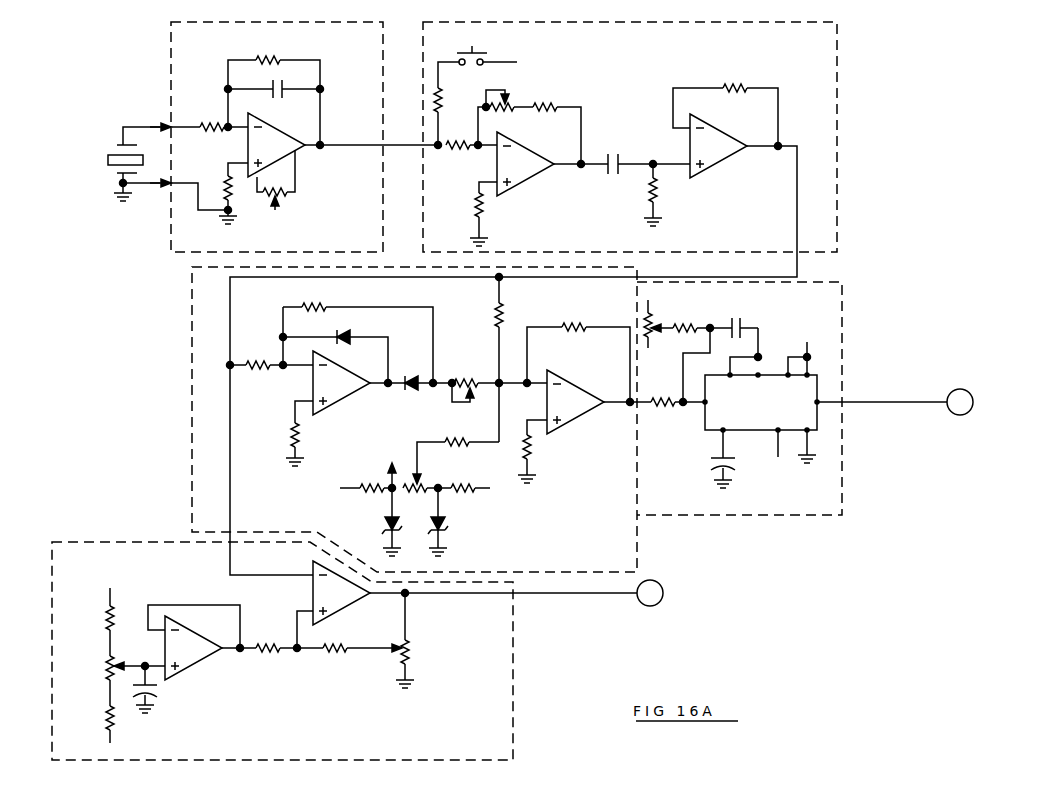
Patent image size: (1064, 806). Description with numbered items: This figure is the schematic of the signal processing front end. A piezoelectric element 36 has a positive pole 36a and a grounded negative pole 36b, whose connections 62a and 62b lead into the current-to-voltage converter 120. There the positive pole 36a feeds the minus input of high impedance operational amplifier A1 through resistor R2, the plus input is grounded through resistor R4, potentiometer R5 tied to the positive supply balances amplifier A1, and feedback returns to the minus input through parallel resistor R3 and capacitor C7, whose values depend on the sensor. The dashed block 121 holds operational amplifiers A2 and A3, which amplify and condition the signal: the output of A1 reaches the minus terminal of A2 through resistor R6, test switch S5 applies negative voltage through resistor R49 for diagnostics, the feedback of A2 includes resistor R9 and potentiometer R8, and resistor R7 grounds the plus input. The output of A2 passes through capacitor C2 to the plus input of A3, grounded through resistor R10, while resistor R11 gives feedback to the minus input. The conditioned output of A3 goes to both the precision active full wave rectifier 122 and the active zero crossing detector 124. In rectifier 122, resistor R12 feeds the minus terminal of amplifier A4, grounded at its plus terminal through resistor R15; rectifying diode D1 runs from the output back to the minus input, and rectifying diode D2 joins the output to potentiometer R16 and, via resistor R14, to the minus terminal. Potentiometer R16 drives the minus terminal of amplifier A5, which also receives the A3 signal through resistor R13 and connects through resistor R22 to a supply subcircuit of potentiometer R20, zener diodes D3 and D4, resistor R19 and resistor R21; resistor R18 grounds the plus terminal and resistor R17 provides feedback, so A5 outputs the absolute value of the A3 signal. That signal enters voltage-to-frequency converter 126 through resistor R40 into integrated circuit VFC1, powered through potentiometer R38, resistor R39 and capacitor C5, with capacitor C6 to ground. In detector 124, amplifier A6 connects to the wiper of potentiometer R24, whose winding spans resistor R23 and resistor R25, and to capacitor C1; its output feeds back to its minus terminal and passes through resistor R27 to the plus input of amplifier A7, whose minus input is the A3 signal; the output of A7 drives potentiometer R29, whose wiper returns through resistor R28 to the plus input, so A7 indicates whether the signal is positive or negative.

The current-to-voltage converter 120 is at (197, 50).
The amplifier stage 121 is at (820, 63).
The precision active full wave rectifier 122 is at (612, 540).
The active zero crossing detector 124 is at (500, 682).
The voltage-to-frequency converter 126 is at (812, 492).
The piezoelectric element 36 is at (108, 157).
The positive pole 36a is at (117, 143).
The negative pole 36b is at (117, 173).
The transducer lead 62a is at (132, 127).
The transducer lead 62b is at (118, 187).
The operational amplifier A1 is at (343, 145).
The operational amplifier A2 is at (552, 164).
The operational amplifier A3 is at (513, 344).
The operational amplifier A4 is at (352, 383).
The operational amplifier A5 is at (599, 402).
The operational amplifier A6 is at (202, 642).
The operational amplifier A7 is at (511, 604).
The resistor R2 is at (219, 125).
The resistor R3 is at (278, 58).
The resistor R4 is at (237, 193).
The potentiometer R5 is at (284, 196).
The resistor R6 is at (466, 157).
The resistor R7 is at (484, 204).
The potentiometer R8 is at (516, 104).
The resistor R9 is at (558, 104).
The resistor R10 is at (660, 192).
The resistor R11 is at (746, 86).
The resistor R12 is at (270, 362).
The resistor R13 is at (505, 304).
The resistor R14 is at (326, 304).
The resistor R15 is at (302, 437).
The potentiometer R16 is at (486, 368).
The resistor R17 is at (584, 322).
The resistor R18 is at (536, 450).
The resistor R19 is at (378, 484).
The potentiometer R20 is at (424, 484).
The resistor R21 is at (472, 483).
The resistor R22 is at (468, 440).
The resistor R23 is at (112, 610).
The potentiometer R24 is at (106, 668).
The resistor R25 is at (106, 720).
The resistor R27 is at (262, 656).
The resistor R28 is at (332, 656).
The potentiometer R29 is at (412, 650).
The potentiometer R38 is at (656, 322).
The resistor R39 is at (698, 322).
The resistor R40 is at (658, 410).
The resistor R49 is at (445, 98).
The test switch S5 is at (494, 50).
The capacitor C1 is at (156, 696).
The capacitor C2 is at (606, 156).
The capacitor C5 is at (742, 326).
The capacitor C6 is at (734, 464).
The capacitor C7 is at (286, 88).
The rectifying diode D1 is at (334, 345).
The rectifying diode D2 is at (420, 395).
The zener diode D3 is at (377, 522).
The zener diode D4 is at (454, 522).
The integrated circuit VFC1 is at (817, 380).